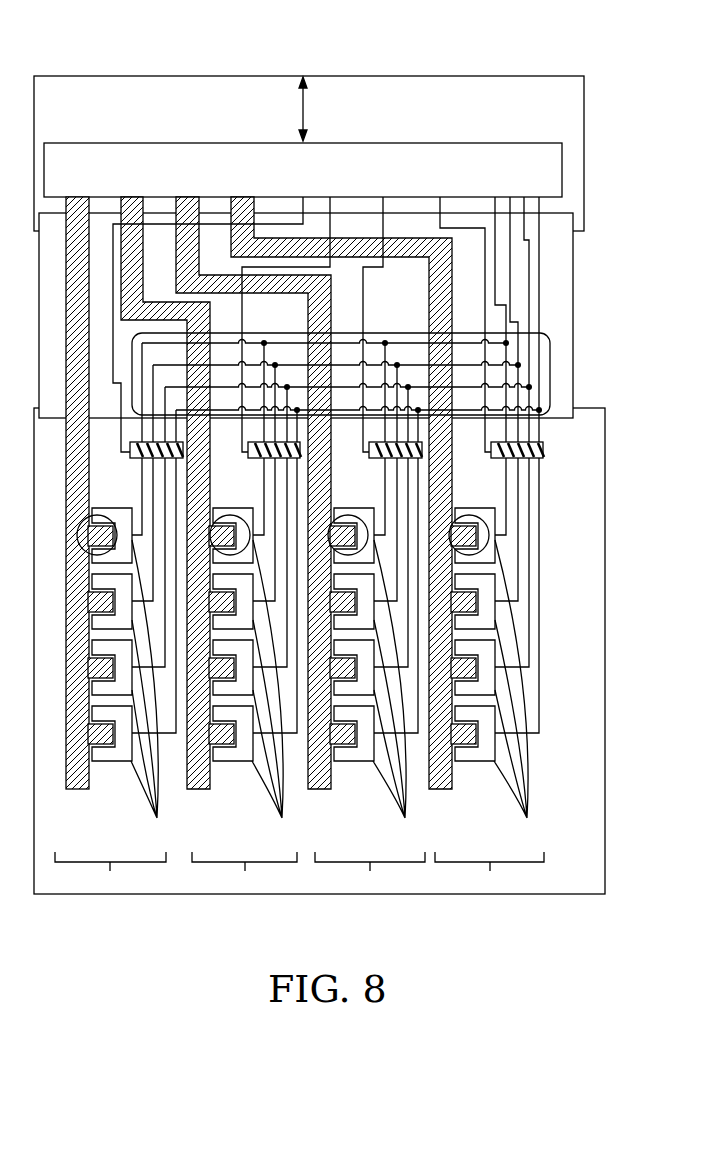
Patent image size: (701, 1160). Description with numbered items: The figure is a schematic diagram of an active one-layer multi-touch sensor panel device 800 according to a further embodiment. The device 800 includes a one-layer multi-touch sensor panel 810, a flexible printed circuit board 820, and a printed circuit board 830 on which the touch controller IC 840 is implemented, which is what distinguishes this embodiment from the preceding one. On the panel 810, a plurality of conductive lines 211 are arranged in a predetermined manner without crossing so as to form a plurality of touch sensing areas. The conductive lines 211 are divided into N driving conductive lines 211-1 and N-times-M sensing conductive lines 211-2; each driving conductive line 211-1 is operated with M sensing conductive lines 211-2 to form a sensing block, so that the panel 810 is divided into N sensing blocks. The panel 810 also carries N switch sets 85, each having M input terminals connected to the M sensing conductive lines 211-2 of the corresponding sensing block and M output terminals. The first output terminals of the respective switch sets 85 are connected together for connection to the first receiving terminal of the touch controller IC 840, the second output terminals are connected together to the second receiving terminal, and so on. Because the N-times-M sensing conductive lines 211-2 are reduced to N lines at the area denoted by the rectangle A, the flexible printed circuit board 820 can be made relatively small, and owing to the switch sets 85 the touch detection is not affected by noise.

The active one-layer multi-touch sensor panel device 800 is at (121, 16).
The one-layer multi-touch sensor panel 810 is at (318, 895).
The flexible printed circuit board 820 is at (574, 316).
The printed circuit board 830 is at (304, 76).
The touch controller IC 840 is at (113, 143).
The switch set 85 is at (143, 452).
The conductive lines 211 is at (299, 873).
The driving conductive line 211-1 is at (75, 790).
The sensing conductive line 211-2 is at (310, 665).
The rectangle A is at (550, 373).